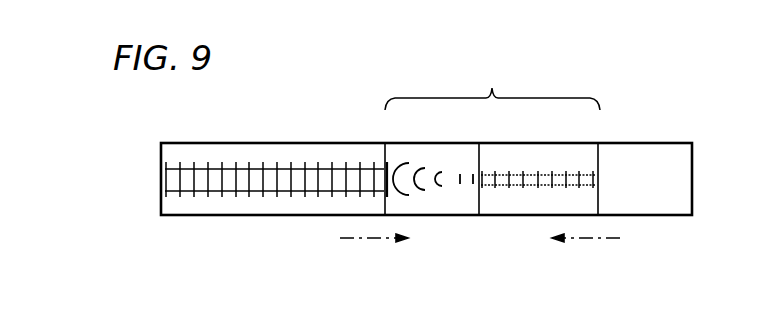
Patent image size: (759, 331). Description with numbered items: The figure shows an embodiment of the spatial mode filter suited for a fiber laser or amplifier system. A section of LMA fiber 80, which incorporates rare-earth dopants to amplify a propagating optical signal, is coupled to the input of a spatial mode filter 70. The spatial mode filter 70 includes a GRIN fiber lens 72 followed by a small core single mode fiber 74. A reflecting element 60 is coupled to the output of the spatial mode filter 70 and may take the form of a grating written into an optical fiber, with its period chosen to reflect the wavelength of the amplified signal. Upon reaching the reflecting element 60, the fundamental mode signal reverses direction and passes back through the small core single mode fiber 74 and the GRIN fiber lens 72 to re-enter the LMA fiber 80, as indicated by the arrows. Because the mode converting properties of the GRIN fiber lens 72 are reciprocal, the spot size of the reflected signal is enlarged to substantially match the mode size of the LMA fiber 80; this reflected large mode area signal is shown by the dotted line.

The reflecting element 60 is at (680, 178).
The spatial mode filter 70 is at (492, 86).
The GRIN fiber lens 72 is at (432, 215).
The small core single mode fiber 74 is at (532, 215).
The LMA fiber 80 is at (247, 215).